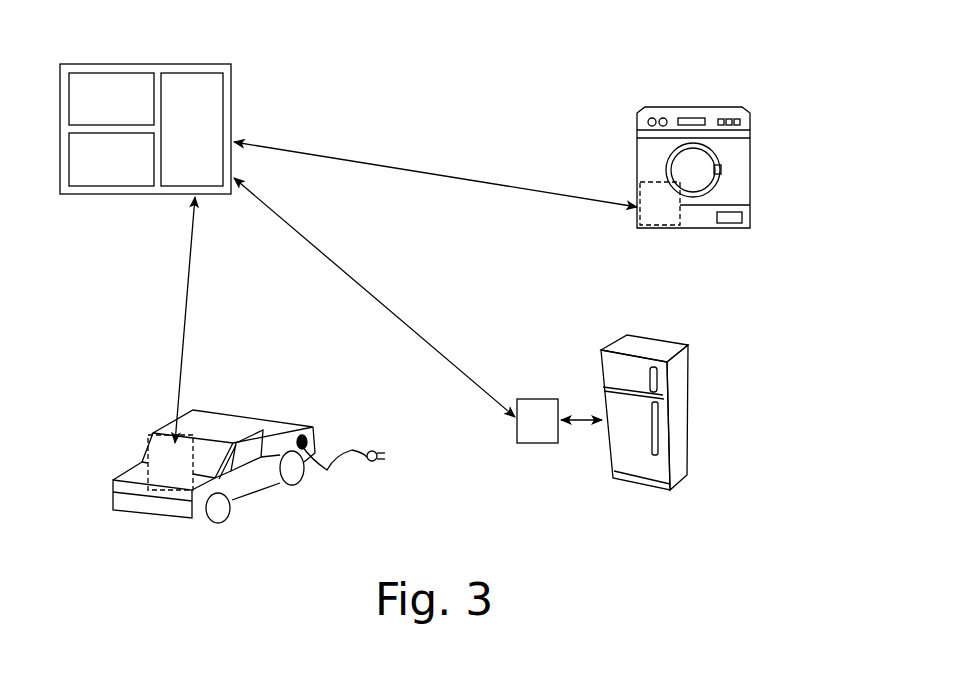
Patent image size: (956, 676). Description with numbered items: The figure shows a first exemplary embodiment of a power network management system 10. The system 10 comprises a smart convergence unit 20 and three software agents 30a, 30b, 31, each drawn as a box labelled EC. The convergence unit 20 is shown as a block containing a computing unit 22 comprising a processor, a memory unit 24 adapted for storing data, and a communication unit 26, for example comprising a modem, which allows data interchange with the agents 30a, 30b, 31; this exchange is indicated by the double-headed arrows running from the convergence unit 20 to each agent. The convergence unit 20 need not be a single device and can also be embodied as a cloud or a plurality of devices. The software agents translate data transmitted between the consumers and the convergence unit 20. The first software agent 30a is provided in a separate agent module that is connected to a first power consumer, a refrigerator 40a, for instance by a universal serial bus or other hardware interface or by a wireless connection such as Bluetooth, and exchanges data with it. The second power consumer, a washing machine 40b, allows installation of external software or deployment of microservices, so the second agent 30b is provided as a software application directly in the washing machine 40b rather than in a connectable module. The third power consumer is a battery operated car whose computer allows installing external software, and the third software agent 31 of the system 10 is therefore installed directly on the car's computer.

The system 10 is at (402, 38).
The smart convergence unit 20 is at (181, 127).
The computing unit 22 is at (97, 112).
The memory unit 24 is at (97, 170).
The communication unit 26 is at (179, 142).
The first software agent 30a is at (529, 437).
The second software agent 30b is at (621, 220).
The third software agent 31 is at (158, 488).
The refrigerator 40a is at (699, 437).
The washing machine 40b is at (730, 94).